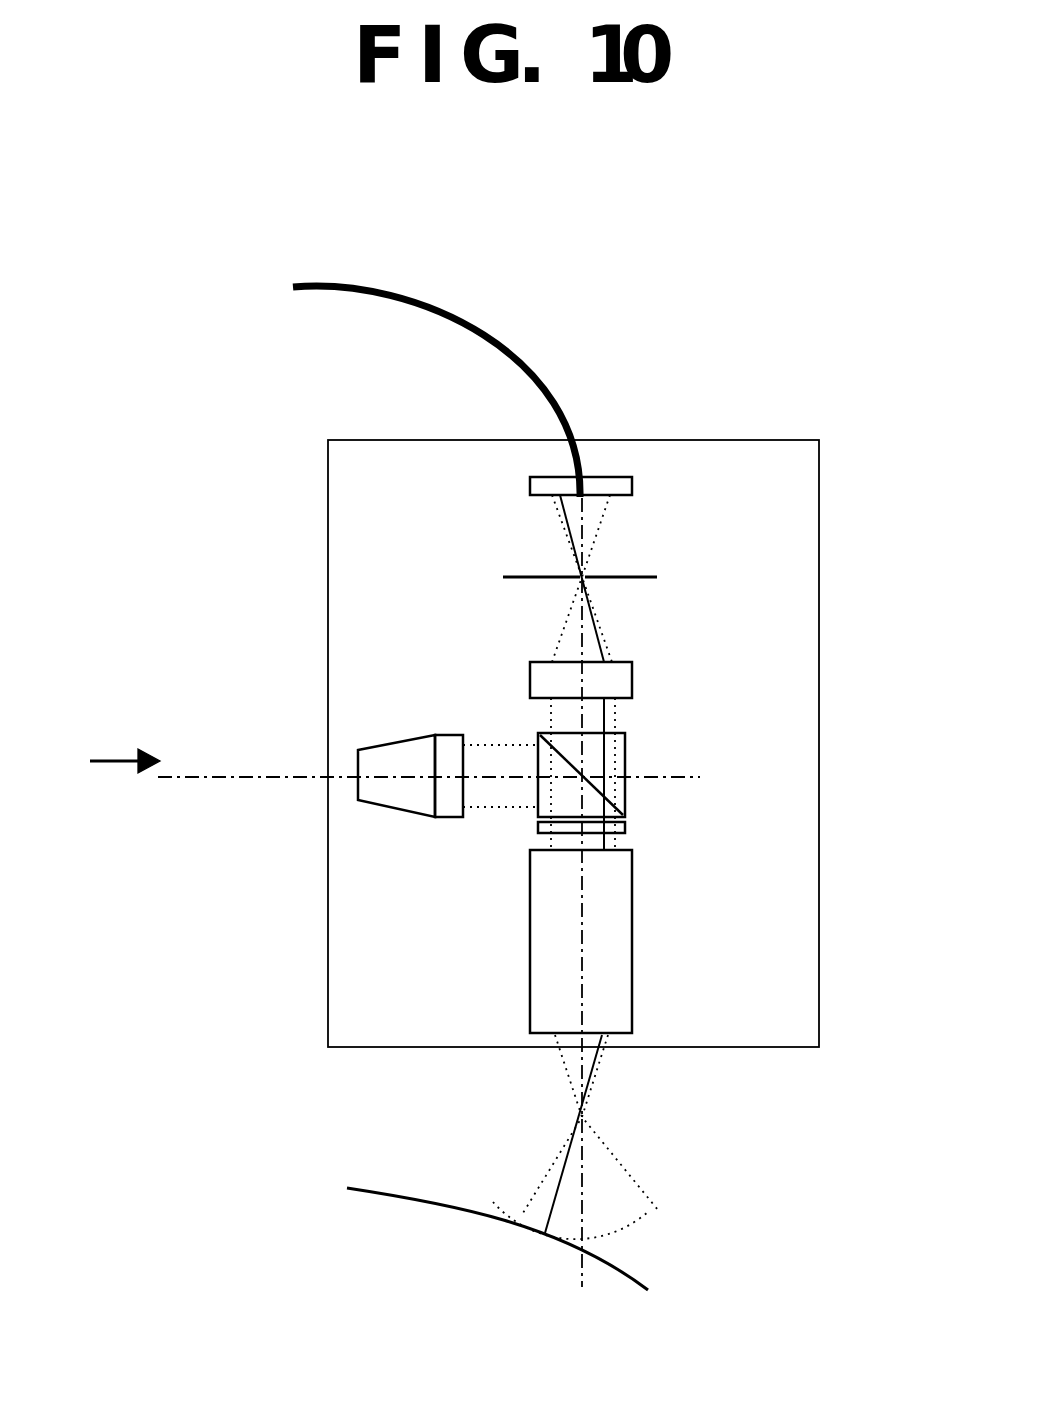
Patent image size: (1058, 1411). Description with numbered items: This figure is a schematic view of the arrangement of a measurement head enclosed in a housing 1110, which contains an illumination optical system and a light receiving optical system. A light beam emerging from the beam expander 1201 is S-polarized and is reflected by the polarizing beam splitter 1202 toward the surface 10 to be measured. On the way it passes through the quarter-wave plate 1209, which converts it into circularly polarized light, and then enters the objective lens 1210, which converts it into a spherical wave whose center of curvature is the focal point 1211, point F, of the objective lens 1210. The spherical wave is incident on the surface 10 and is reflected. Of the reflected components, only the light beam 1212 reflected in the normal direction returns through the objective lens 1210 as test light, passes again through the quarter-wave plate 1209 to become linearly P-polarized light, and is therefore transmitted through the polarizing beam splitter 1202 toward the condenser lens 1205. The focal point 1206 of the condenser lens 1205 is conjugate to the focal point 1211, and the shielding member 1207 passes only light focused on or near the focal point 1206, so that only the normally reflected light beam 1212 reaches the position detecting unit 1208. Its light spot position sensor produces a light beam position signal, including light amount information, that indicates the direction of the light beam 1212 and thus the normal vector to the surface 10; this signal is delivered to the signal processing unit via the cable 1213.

The surface to be measured 10 is at (387, 1198).
The measurement optical unit housing 1110 is at (328, 472).
The beam expander 1201 is at (396, 748).
The polarizing beam splitter 1202 is at (540, 793).
The condenser lens 1205 is at (620, 683).
The focal point of the condenser lens 1206 is at (582, 583).
The shielding member 1207 is at (633, 577).
The position detecting unit 1208 is at (592, 487).
The λ/4 plate 1209 is at (620, 828).
The objective lens 1210 is at (620, 948).
The focal point of the objective lens 1211 is at (590, 1115).
The light beam reflected in the normal direction 1212 is at (553, 1197).
The cable 1213 is at (487, 332).